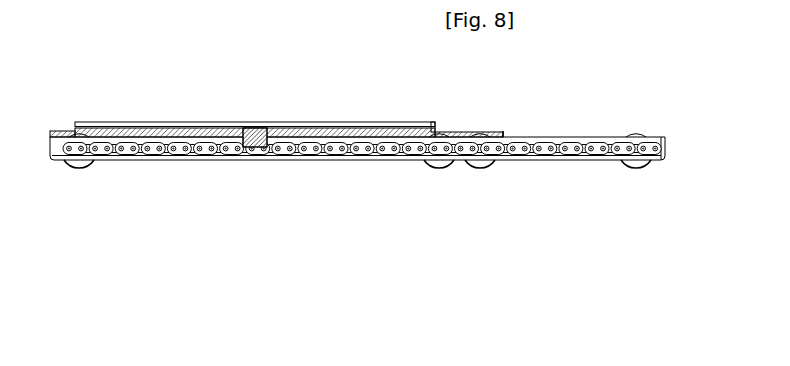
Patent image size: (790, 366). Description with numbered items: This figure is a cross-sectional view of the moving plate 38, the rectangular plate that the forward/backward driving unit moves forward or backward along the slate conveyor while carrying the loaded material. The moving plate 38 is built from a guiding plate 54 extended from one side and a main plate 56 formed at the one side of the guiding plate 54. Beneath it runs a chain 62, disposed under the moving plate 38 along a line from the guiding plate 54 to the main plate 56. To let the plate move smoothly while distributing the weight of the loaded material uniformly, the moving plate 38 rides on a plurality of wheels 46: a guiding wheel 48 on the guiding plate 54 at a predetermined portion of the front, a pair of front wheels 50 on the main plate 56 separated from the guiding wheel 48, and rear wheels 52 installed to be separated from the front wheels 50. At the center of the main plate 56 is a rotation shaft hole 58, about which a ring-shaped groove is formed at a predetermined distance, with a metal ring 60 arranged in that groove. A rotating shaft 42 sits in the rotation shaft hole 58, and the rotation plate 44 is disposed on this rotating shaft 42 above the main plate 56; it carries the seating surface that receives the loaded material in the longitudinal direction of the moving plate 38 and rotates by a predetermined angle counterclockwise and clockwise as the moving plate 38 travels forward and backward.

The moving plate 38 is at (355, 97).
The rotating shaft 42 is at (252, 128).
The rotation plate 44 is at (124, 112).
The wheels 46 is at (357, 174).
The guiding wheel 48 is at (636, 169).
The front wheels 50 is at (478, 169).
The rear wheels 52 is at (80, 169).
The guiding plate 54 is at (540, 141).
The main plate 56 is at (503, 132).
The rotation shaft hole 58 is at (276, 128).
The metal ring 60 is at (151, 120).
The chain 62 is at (598, 137).